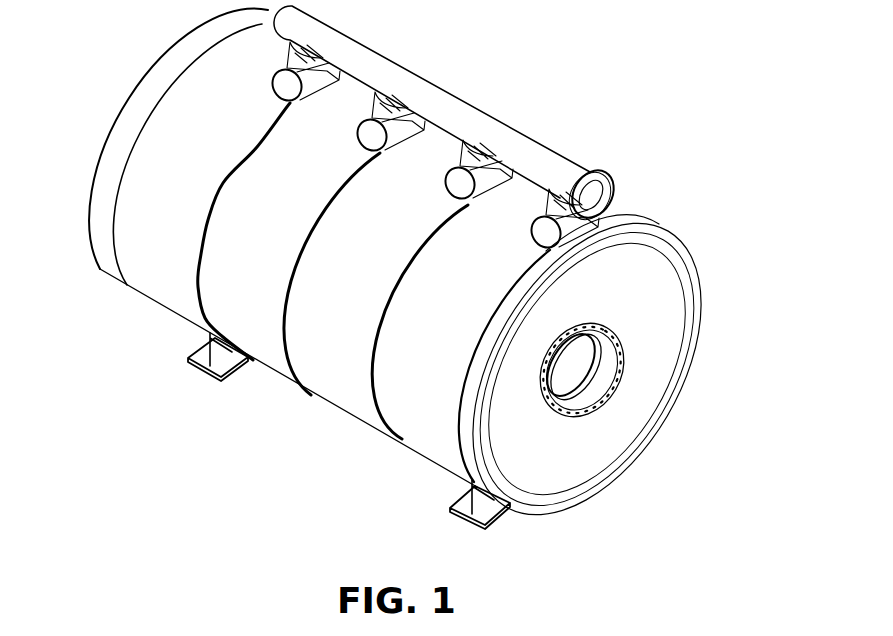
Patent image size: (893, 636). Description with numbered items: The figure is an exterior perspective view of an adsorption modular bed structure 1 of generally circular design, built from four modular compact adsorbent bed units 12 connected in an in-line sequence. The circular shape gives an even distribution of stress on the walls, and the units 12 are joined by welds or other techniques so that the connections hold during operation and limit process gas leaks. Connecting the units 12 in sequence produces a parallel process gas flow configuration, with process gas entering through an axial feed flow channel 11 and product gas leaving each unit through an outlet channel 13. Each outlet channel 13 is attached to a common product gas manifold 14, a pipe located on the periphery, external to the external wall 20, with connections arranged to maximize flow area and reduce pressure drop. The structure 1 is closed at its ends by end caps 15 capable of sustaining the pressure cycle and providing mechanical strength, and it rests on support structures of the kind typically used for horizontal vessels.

The adsorption modular bed structure 1 is at (728, 300).
The axial feed flow channel 11 is at (580, 392).
The modular compact adsorbent bed unit 12 is at (340, 430).
The outlet channel 13 is at (537, 263).
The product gas manifold 14 is at (520, 133).
The end cap 15 is at (95, 124).
The external wall 20 is at (175, 340).